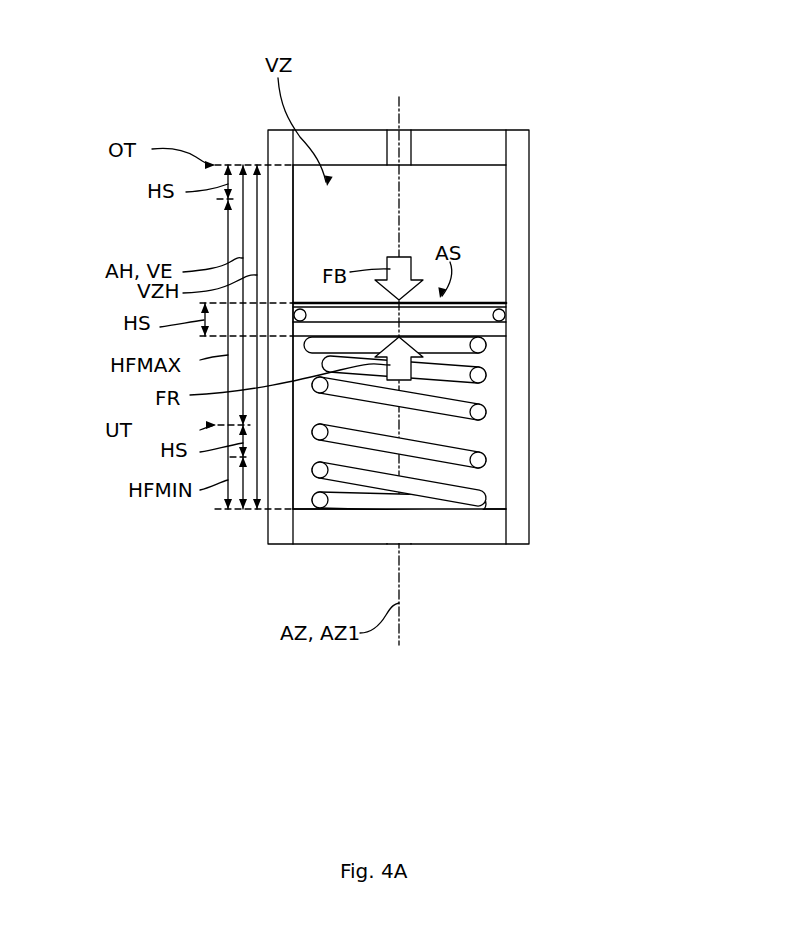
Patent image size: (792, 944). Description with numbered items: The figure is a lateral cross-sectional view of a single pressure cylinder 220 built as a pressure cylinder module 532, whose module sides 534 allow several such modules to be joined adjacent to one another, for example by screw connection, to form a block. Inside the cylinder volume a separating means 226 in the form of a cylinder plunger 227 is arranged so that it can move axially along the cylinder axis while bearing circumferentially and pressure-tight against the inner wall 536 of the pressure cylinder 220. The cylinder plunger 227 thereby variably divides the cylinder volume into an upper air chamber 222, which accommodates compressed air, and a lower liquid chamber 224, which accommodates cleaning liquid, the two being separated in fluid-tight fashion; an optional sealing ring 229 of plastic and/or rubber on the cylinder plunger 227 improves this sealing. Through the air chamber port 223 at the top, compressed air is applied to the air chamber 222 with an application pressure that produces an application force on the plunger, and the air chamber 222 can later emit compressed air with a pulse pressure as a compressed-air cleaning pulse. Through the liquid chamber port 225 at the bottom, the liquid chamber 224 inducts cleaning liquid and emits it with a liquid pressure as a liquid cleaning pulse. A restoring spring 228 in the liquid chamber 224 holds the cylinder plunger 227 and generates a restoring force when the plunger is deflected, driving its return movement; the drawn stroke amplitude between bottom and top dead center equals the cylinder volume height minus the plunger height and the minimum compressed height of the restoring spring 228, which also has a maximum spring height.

The pressure cylinder 220 is at (597, 30).
The air chamber 222 is at (493, 243).
The air chamber port 223 is at (400, 127).
The liquid chamber 224 is at (490, 487).
The liquid chamber port 225 is at (398, 538).
The separating means 226 is at (494, 304).
The cylinder plunger 227 is at (503, 330).
The restoring spring 228 is at (480, 413).
The sealing ring 229 is at (498, 315).
The pressure cylinder module 532 is at (478, 106).
The module side 534 is at (266, 250).
The inner wall 536 is at (296, 257).